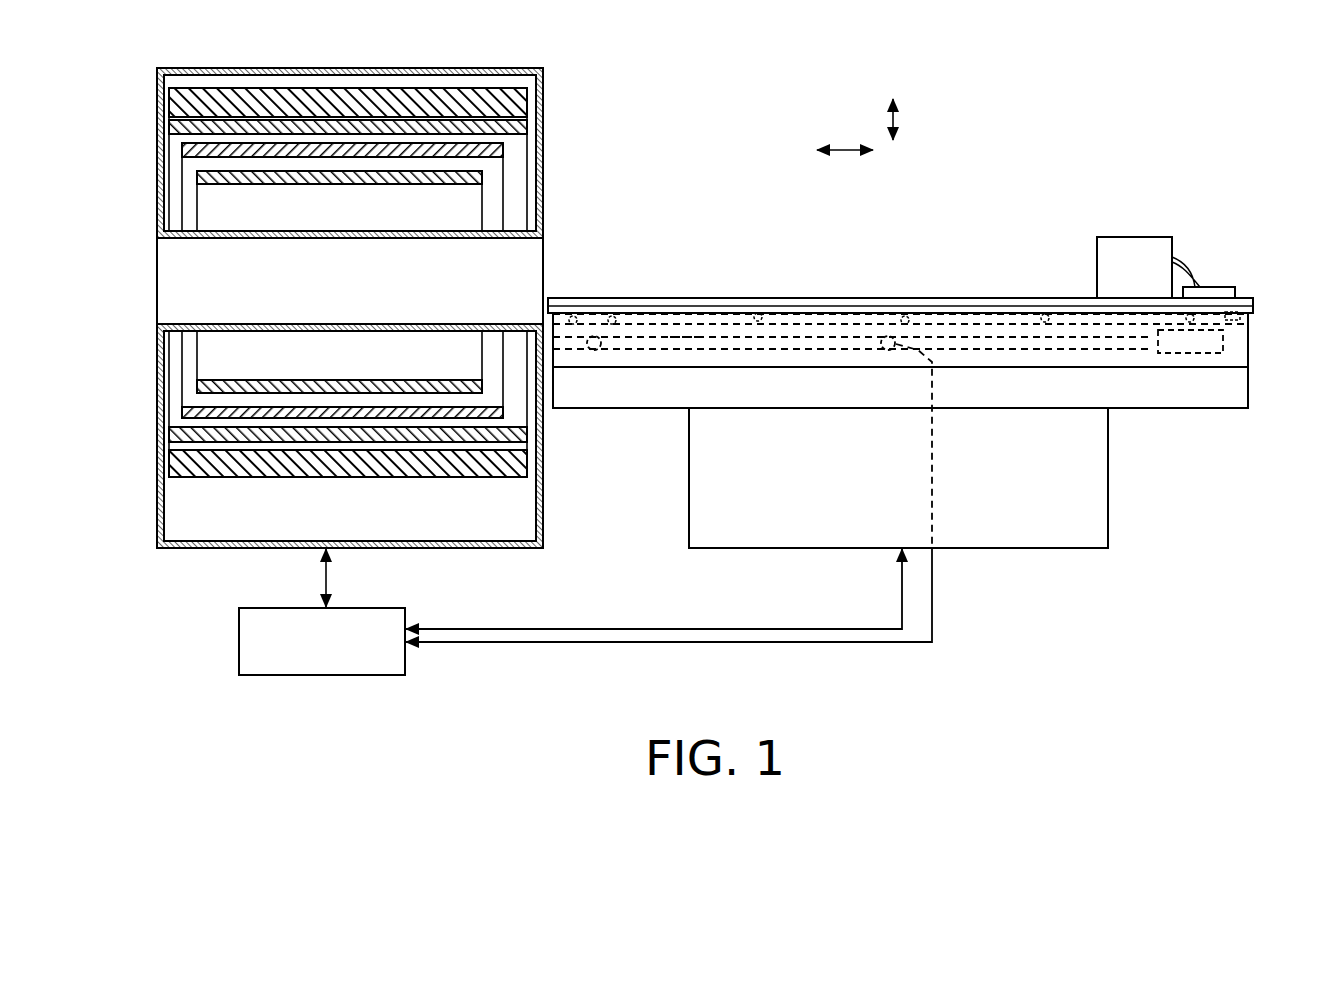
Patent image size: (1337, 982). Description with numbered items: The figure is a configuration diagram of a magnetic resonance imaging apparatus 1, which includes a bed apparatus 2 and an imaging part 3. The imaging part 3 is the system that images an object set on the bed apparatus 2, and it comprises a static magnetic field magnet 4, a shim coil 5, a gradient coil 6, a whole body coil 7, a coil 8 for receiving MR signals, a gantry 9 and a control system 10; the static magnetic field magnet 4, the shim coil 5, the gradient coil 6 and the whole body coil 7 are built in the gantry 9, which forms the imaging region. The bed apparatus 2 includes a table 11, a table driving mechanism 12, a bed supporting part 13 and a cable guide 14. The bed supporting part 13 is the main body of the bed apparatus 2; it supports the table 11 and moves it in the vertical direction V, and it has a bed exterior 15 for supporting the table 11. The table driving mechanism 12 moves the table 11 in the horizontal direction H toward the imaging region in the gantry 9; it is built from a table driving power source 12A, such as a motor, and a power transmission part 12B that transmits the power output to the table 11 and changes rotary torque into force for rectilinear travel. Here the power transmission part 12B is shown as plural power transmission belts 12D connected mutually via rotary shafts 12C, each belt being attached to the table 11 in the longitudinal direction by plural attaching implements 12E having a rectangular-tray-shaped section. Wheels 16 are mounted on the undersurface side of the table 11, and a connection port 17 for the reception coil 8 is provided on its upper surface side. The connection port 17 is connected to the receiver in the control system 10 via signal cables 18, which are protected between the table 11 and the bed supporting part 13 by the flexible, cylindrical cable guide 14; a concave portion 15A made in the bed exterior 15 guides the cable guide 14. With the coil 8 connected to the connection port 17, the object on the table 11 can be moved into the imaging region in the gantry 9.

The magnetic resonance imaging apparatus 1 is at (730, 148).
The bed apparatus 2 is at (853, 409).
The imaging part 3 is at (384, 350).
The static magnetic field magnet 4 is at (531, 100).
The shim coil 5 is at (531, 124).
The gradient coil 6 is at (504, 150).
The whole body coil 7 is at (483, 178).
The coil 8 is at (1120, 237).
The gantry 9 is at (544, 200).
The control system 10 is at (405, 615).
The table 11 is at (947, 298).
The table driving mechanism 12 is at (926, 340).
The table driving power source 12A is at (1193, 354).
The power transmission part 12B is at (652, 278).
The rotary shafts 12C is at (598, 337).
The power transmission belts 12D is at (681, 293).
The attaching implements 12E is at (1249, 333).
The bed supporting part 13 is at (689, 463).
The cable guide 14 is at (881, 338).
The bed exterior 15 is at (1237, 305).
The concave portion 15A is at (572, 326).
The wheels 16 is at (760, 313).
The connection port 17 is at (1212, 287).
The signal cables 18 is at (932, 515).
The horizontal direction H is at (840, 147).
The vertical direction V is at (895, 122).